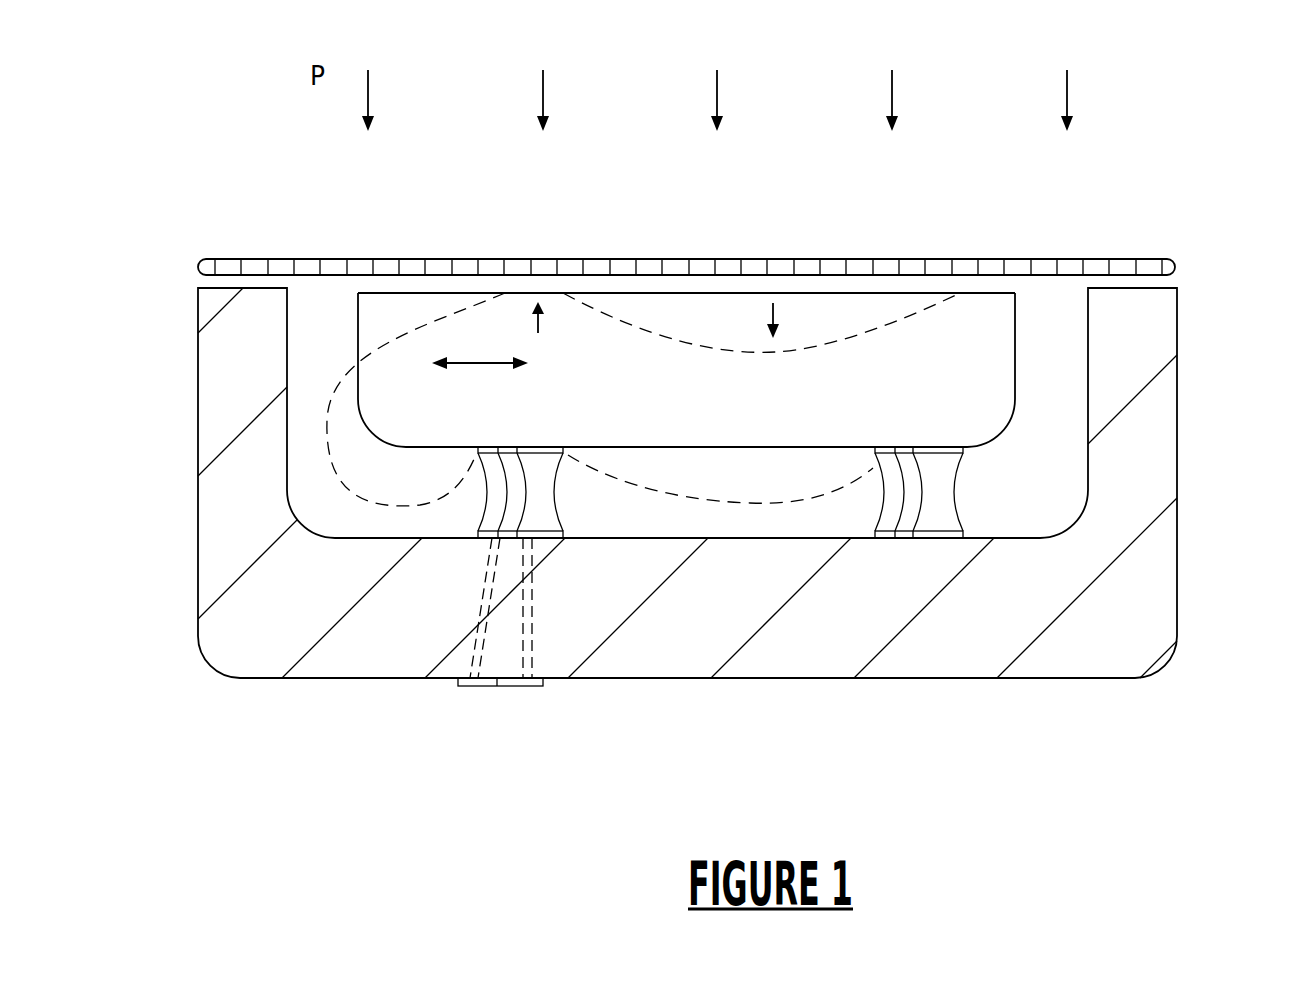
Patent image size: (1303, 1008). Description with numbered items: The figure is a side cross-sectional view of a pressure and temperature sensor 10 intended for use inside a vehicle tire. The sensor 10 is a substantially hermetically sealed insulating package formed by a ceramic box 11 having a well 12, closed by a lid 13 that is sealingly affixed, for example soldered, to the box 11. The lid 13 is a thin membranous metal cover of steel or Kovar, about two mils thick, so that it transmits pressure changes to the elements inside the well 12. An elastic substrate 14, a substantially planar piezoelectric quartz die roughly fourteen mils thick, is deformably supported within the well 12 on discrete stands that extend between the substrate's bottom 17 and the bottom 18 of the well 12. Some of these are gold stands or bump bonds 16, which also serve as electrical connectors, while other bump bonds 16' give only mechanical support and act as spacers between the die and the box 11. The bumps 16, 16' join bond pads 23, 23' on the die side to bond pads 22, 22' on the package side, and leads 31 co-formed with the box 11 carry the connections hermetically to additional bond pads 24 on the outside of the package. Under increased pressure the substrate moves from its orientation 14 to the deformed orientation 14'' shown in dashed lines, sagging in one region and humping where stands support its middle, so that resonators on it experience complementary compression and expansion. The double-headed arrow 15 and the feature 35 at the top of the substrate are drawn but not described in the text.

The pressure and temperature sensor 10 is at (1184, 194).
The ceramic box 11 is at (1208, 409).
The well 12 is at (1068, 458).
The lid 13 is at (1177, 271).
The elastic substrate 14 is at (686, 370).
The deformed orientation 14'' is at (600, 399).
The lateral displacement arrows 15 is at (459, 363).
The gold stand 16 is at (494, 495).
The bump bond 16' is at (894, 494).
The substrate's bottom 17 is at (1002, 432).
The bottom of the well 18 is at (357, 540).
The bond pad 22 is at (557, 508).
The bond pad 22' is at (954, 517).
The bond pad 23 is at (541, 415).
The bond pad 23' is at (925, 421).
The bond pad 24 is at (505, 688).
The lead 31 is at (480, 663).
The insert top surface 35 is at (414, 292).